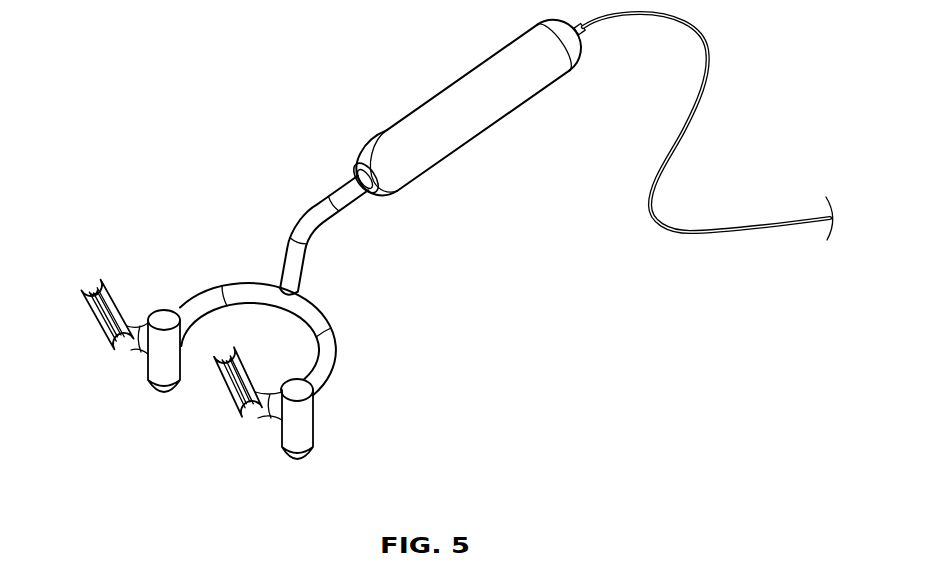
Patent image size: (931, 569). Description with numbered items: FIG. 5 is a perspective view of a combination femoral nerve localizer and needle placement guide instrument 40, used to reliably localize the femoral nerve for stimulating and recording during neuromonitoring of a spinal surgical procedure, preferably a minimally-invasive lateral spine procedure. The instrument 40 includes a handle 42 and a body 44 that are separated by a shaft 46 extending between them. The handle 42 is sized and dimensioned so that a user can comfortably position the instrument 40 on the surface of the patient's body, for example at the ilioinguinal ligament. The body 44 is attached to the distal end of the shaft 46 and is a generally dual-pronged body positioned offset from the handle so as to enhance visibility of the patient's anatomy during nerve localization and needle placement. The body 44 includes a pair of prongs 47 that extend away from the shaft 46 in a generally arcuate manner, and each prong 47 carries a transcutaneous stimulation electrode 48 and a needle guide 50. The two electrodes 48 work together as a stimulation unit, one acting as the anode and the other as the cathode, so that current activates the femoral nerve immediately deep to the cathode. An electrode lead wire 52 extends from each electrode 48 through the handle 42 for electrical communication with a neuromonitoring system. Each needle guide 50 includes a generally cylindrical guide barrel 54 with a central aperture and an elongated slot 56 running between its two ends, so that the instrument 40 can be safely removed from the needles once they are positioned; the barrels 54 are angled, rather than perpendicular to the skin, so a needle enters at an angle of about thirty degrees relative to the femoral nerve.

The combination femoral nerve localizer and needle placement guide instrument 40 is at (261, 154).
The handle 42 is at (458, 97).
The body 44 is at (208, 361).
The shaft 46 is at (300, 268).
The prongs 47 is at (202, 307).
The transcutaneous stimulation electrode 48 is at (155, 350).
The needle guide 50 is at (82, 285).
The electrode lead wire 52 is at (702, 92).
The guide barrel 54 is at (153, 345).
The slot 56 is at (112, 335).